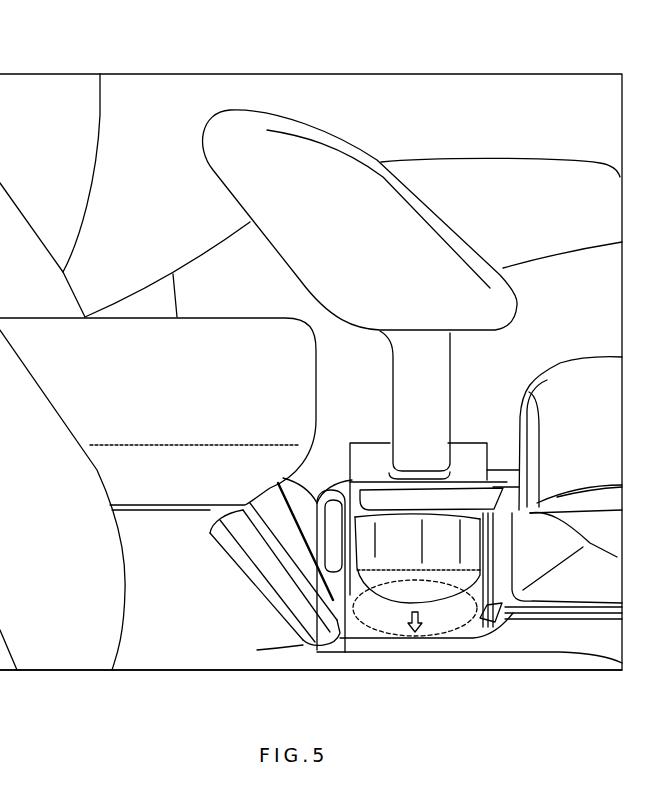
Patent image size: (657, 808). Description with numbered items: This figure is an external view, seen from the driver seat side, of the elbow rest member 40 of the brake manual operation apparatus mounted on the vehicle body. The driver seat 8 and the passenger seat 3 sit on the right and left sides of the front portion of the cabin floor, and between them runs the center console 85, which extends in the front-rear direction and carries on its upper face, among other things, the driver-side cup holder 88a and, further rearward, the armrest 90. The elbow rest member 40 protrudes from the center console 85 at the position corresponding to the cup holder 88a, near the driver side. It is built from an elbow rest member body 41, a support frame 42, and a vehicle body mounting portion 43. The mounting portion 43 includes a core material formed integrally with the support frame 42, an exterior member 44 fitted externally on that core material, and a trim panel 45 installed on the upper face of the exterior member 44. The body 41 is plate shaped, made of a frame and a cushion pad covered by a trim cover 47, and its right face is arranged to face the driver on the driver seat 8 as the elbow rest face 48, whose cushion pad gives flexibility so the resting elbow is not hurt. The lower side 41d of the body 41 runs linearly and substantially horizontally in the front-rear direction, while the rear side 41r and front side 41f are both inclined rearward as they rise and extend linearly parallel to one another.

The passenger seat 3 is at (115, 121).
The driver seat 8 is at (78, 418).
The elbow rest member 40 is at (310, 93).
The elbow rest member body 41 is at (205, 176).
The lower side 41d is at (472, 335).
The front side 41f is at (470, 237).
The rear side 41r is at (277, 256).
The support frame 42 is at (452, 373).
The vehicle body mounting portion 43 is at (369, 430).
The exterior member 44 is at (488, 557).
The trim panel 45 is at (463, 452).
The trim cover 47 is at (340, 177).
The elbow rest face 48 is at (397, 233).
The center console 85 is at (583, 330).
The cup holder 88a is at (495, 620).
The armrest 90 is at (172, 273).